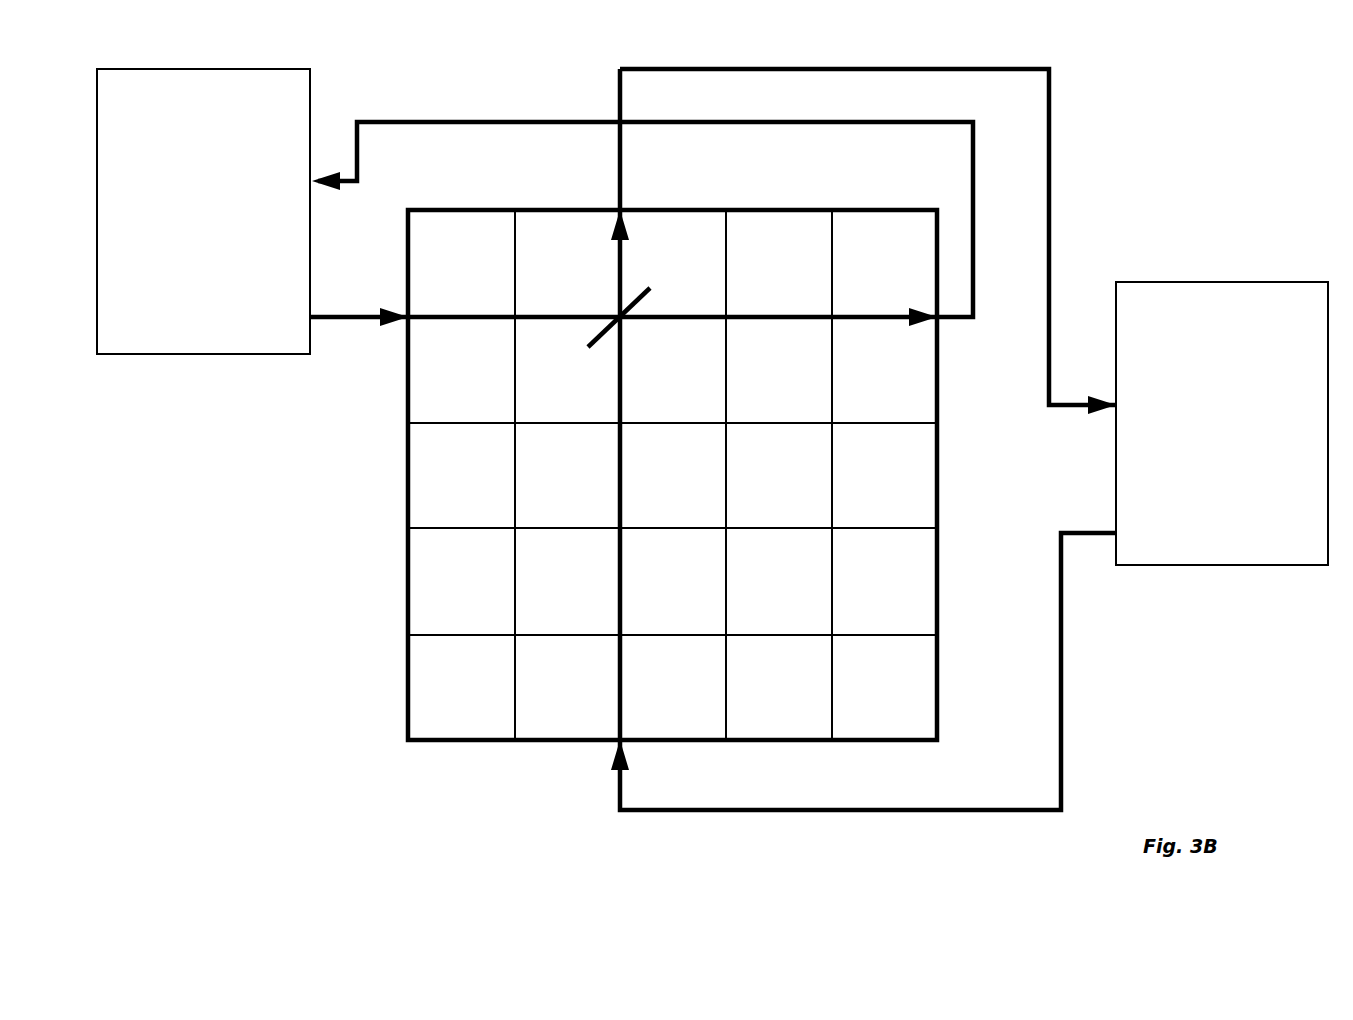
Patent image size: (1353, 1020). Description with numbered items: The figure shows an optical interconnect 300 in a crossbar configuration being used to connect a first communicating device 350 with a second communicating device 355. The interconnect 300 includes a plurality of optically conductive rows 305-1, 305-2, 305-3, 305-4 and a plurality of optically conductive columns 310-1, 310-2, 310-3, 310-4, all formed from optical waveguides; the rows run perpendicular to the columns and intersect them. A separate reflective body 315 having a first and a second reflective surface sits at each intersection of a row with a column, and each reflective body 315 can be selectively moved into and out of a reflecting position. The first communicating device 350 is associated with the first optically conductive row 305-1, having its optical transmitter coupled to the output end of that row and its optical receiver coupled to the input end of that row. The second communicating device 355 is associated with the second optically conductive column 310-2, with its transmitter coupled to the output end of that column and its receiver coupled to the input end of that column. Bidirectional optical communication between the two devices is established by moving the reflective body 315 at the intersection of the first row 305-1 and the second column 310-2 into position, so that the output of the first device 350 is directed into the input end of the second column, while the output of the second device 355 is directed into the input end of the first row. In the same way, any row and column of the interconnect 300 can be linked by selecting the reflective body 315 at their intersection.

The optical interconnect 300 is at (700, 452).
The first optically conductive row 305-1 is at (408, 317).
The second optically conductive row 305-2 is at (408, 423).
The third optically conductive row 305-3 is at (408, 528).
The fourth optically conductive row 305-4 is at (408, 635).
The first optically conductive column 310-1 is at (515, 210).
The second optically conductive column 310-2 is at (620, 210).
The third optically conductive column 310-3 is at (726, 210).
The fourth optically conductive column 310-4 is at (832, 210).
The reflective body 315 is at (607, 328).
The first communicating device 350 is at (203, 211).
The second communicating device 355 is at (1222, 423).